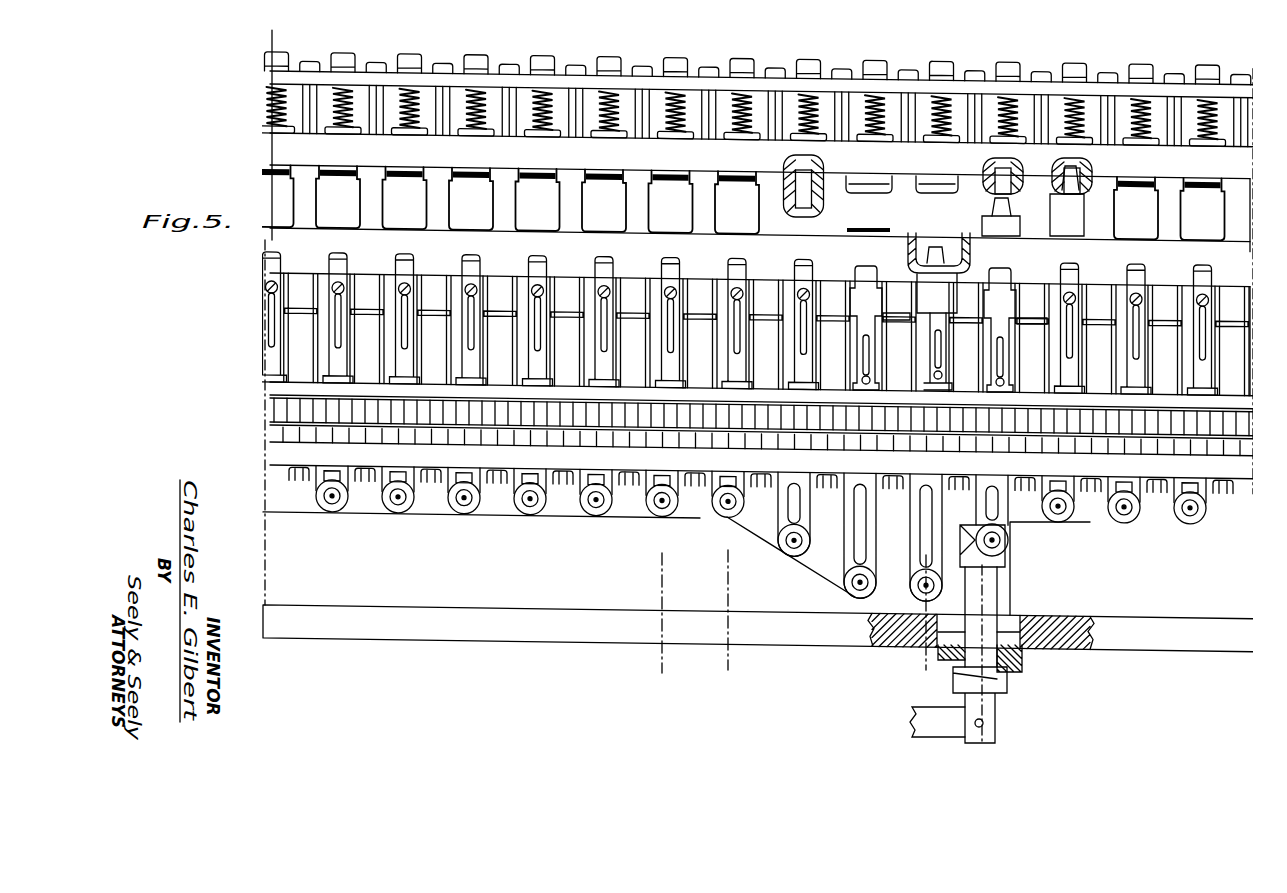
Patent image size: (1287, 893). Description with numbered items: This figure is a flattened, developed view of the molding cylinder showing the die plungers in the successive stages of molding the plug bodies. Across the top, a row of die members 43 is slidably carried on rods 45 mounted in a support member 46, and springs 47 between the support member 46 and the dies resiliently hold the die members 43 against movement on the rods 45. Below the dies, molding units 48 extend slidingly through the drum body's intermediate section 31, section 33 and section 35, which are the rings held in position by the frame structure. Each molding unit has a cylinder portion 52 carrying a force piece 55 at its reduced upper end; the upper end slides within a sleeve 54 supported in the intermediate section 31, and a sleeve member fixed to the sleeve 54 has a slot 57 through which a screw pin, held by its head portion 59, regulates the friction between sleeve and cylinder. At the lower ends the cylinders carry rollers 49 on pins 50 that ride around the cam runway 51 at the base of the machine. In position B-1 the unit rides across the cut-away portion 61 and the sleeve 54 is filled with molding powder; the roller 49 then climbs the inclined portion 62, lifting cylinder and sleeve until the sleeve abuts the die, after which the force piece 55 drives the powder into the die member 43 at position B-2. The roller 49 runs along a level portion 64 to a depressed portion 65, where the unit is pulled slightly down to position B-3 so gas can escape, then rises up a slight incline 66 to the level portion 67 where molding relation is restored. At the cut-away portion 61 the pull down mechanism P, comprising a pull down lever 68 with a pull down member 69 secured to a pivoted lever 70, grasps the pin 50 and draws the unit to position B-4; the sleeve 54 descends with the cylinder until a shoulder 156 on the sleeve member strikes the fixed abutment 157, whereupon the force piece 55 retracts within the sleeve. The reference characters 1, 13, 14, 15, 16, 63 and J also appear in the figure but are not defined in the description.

The frame beam 1 is at (493, 632).
The center line 13 is at (925, 626).
The center line 14 is at (730, 624).
The center line 15 is at (660, 625).
The bearing block 16 is at (980, 652).
The intermediate section 31 is at (761, 210).
The section 33 is at (1230, 397).
The section 35 is at (1247, 463).
The die member 43 is at (812, 170).
The rods 45 is at (675, 100).
The support member 46 is at (1157, 90).
The springs 47 is at (352, 97).
The molding units 48 is at (1195, 365).
The rollers 49 is at (347, 503).
The pins 50 is at (332, 498).
The cam runway 51 is at (392, 592).
The cylinder portion 52 is at (1133, 317).
The sleeve 54 is at (923, 232).
The force piece 55 is at (790, 188).
The slot 57 is at (740, 310).
The head portion 59 is at (598, 285).
The cut-away portion 61 is at (880, 600).
The inclined portion 62 is at (806, 573).
The stub 63 is at (824, 184).
The level portion 64 is at (698, 518).
The depressed portion 65 is at (677, 528).
The slight incline 66 is at (580, 515).
The level portion 67 is at (432, 515).
The pull down lever 68 is at (1000, 745).
The pull down member 69 is at (978, 532).
The lever 70 is at (935, 735).
The shoulder 156 is at (1028, 283).
The fixed abutment 157 is at (903, 322).
The band J is at (1250, 423).
The pull down mechanism P is at (1008, 601).
The position B-1 is at (907, 602).
The position B-2 is at (725, 532).
The position B-3 is at (655, 533).
The position B-4 is at (1050, 568).